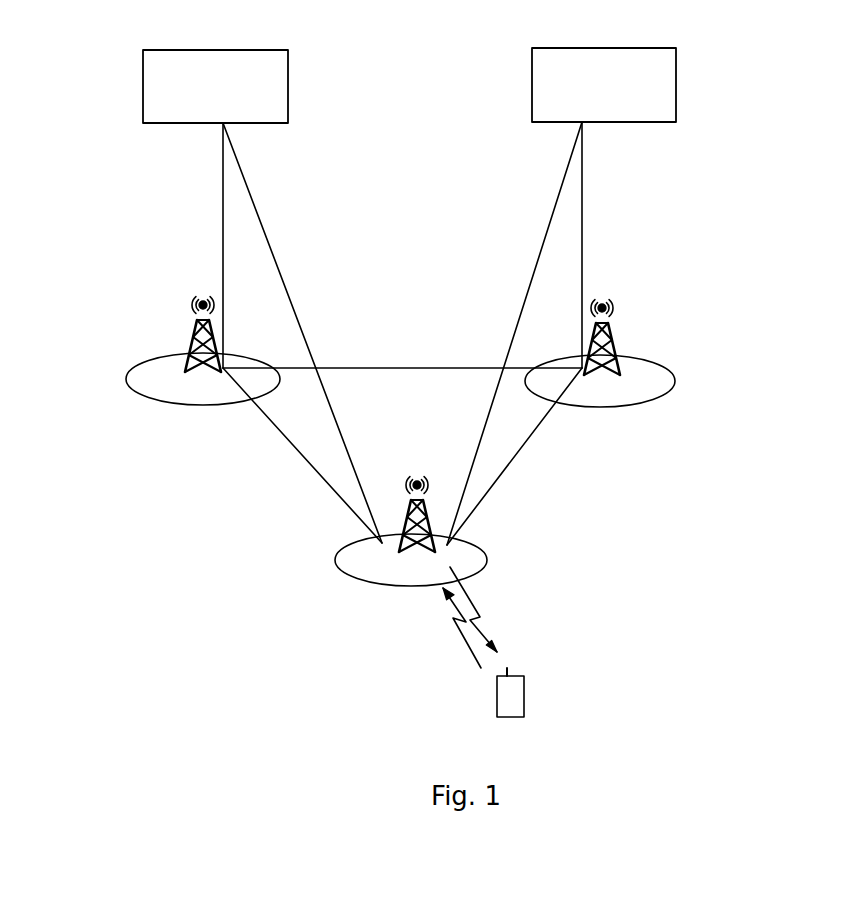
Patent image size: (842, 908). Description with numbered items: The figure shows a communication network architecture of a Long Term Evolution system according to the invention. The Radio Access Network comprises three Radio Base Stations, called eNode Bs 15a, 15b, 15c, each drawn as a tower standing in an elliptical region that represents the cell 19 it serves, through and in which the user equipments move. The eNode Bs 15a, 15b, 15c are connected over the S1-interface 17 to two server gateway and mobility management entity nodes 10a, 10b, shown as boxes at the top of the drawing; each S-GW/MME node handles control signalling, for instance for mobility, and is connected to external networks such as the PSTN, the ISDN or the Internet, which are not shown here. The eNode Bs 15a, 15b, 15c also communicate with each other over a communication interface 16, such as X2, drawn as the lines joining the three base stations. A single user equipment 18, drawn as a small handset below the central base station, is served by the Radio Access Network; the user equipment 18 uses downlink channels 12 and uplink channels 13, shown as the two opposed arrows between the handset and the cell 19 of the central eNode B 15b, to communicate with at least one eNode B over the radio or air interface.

The server gateway and mobility management entity node 10a is at (215, 86).
The server gateway and mobility management entity node 10b is at (604, 85).
The downlink channels 12 is at (472, 597).
The uplink channels 13 is at (468, 642).
The eNode B 15a is at (192, 327).
The eNode B 15b is at (402, 548).
The eNode B 15c is at (612, 328).
The communication interface 16 is at (380, 368).
The S1-interface 17 is at (223, 222).
The user equipment 18 is at (525, 697).
The cell 19 is at (127, 375).